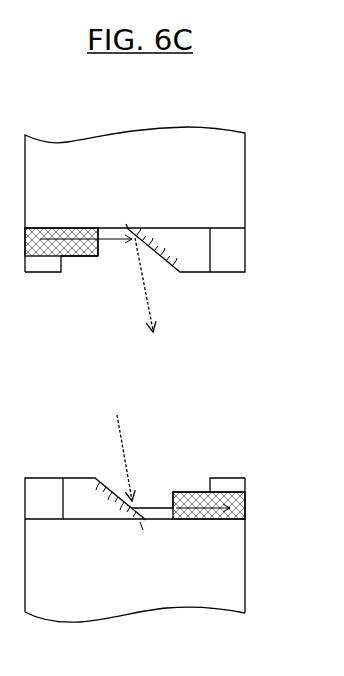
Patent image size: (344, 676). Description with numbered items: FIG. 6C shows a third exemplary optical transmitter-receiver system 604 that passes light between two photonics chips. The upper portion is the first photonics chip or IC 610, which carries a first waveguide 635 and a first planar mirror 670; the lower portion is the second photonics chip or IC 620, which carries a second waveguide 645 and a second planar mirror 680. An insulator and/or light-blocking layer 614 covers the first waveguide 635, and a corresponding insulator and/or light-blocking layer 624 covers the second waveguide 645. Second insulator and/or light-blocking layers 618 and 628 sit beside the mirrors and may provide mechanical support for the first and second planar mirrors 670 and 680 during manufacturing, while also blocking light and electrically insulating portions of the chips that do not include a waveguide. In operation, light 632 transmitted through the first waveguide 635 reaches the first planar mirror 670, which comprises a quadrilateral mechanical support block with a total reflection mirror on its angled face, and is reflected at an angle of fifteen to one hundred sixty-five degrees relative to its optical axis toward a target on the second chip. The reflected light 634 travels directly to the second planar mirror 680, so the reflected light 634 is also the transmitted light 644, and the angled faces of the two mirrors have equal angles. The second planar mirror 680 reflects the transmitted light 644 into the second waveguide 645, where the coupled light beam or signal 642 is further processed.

The optical transmitter-receiver system 604 is at (104, 105).
The first photonics chip or IC 610 is at (156, 197).
The insulator and/or light-blocking layer 614 is at (45, 267).
The second insulator and/or light-blocking layer 618 is at (233, 263).
The second photonics chip or IC 620 is at (159, 574).
The insulator and/or light-blocking layer 624 is at (230, 478).
The second insulator and/or light-blocking layer 628 is at (42, 488).
The light 632 is at (98, 235).
The reflected light 634 is at (148, 302).
The first waveguide 635 is at (80, 252).
The coupled light beam or signal 642 is at (162, 509).
The transmitted light 644 is at (115, 425).
The second waveguide 645 is at (190, 491).
The first planar mirror 670 is at (160, 250).
The second planar mirror 680 is at (118, 499).